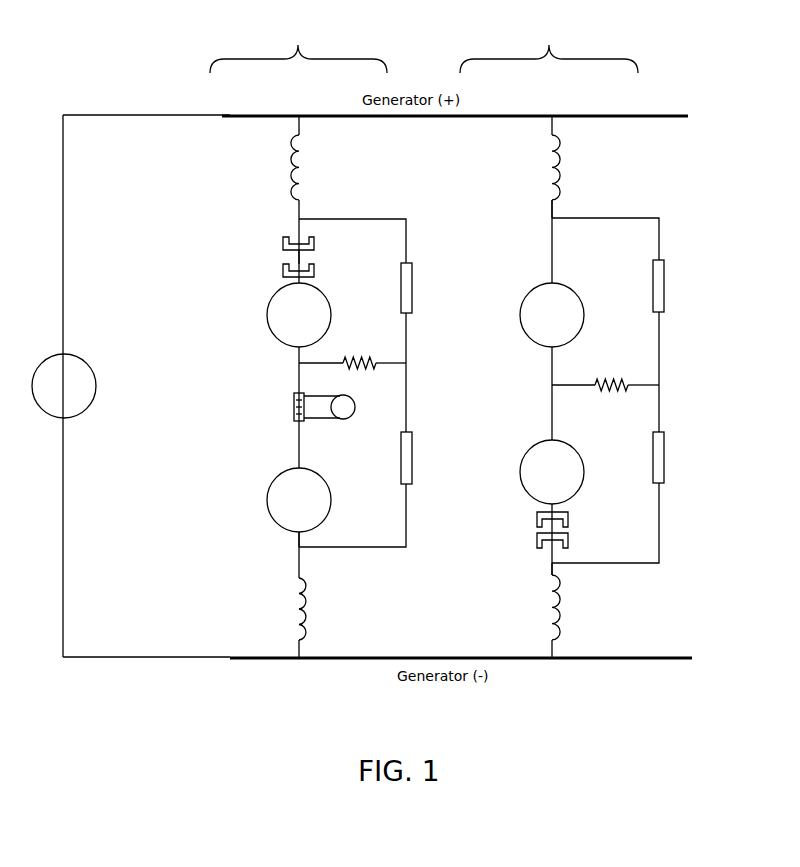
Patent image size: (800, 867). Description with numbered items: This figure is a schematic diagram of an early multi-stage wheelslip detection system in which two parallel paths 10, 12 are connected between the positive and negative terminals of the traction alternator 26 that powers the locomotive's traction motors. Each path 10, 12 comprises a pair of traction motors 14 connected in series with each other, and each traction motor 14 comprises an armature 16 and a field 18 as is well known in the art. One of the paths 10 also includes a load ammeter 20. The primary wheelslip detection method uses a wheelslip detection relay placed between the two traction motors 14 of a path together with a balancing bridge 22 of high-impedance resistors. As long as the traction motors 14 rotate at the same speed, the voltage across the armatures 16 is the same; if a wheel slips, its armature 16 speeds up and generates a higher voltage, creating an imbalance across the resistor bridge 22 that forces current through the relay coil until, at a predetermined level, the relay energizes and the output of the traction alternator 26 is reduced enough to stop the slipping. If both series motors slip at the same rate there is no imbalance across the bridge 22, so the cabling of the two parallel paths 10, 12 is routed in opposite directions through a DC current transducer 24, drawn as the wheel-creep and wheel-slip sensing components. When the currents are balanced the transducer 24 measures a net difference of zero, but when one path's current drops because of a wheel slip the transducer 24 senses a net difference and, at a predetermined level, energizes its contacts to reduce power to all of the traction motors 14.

The parallel path 10 is at (298, 42).
The parallel path 12 is at (549, 42).
The traction motor 14 is at (212, 268).
The armature 16 is at (270, 325).
The field 18 is at (286, 157).
The load ammeter 20 is at (315, 406).
The balancing bridge 22 is at (427, 322).
The DC current transducer 24 is at (316, 247).
The traction alternator 26 is at (73, 364).